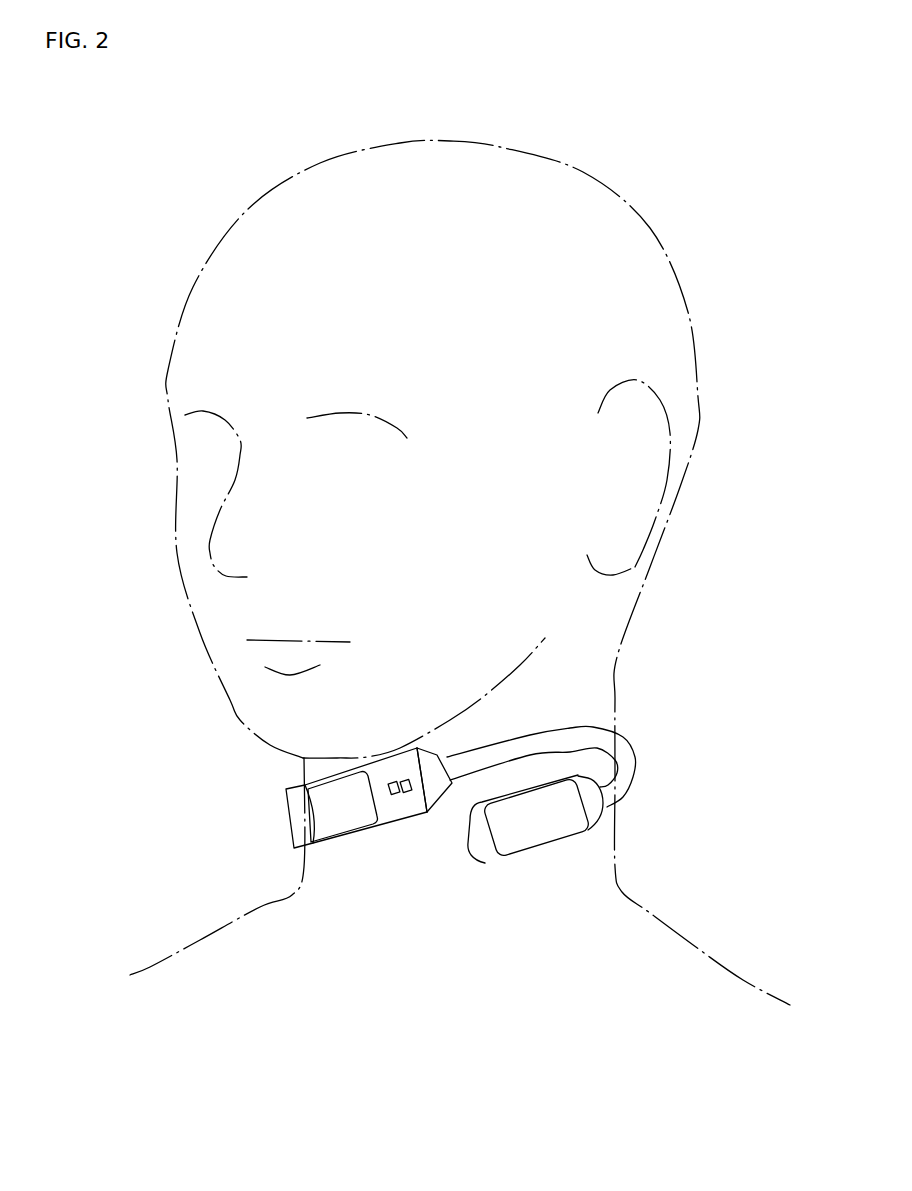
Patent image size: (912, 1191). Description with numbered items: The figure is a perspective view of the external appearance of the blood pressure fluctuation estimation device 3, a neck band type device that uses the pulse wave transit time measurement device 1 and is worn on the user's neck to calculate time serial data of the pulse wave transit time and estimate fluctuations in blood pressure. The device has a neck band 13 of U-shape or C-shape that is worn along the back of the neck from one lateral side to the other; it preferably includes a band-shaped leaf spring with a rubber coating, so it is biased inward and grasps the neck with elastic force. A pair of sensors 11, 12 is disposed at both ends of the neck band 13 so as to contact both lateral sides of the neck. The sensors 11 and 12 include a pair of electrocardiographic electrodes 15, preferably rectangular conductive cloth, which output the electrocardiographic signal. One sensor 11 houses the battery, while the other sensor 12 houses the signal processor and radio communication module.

The pulse wave transit time measurement device 1 is at (461, 939).
The blood pressure fluctuation estimation device 3 is at (461, 939).
The sensor 11 is at (550, 837).
The sensor 12 is at (388, 813).
The neck band 13 is at (473, 765).
The electrocardiographic electrode 15 is at (332, 822).